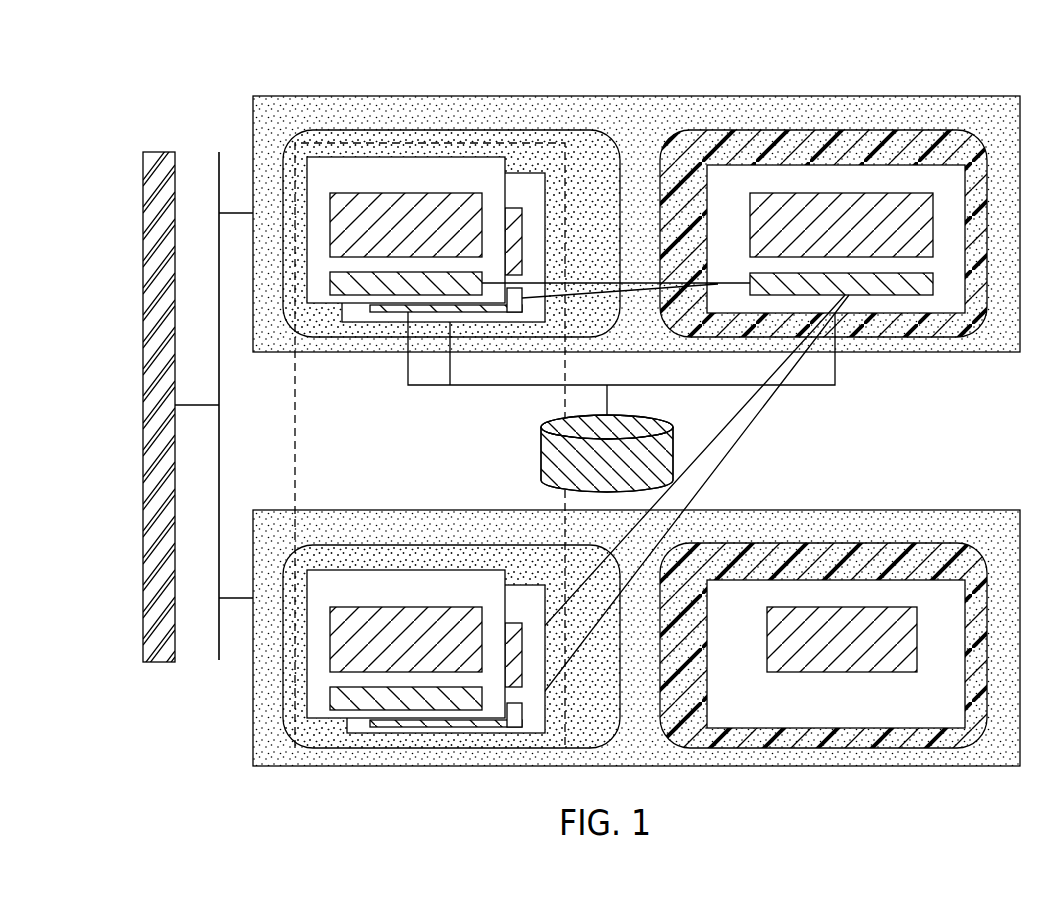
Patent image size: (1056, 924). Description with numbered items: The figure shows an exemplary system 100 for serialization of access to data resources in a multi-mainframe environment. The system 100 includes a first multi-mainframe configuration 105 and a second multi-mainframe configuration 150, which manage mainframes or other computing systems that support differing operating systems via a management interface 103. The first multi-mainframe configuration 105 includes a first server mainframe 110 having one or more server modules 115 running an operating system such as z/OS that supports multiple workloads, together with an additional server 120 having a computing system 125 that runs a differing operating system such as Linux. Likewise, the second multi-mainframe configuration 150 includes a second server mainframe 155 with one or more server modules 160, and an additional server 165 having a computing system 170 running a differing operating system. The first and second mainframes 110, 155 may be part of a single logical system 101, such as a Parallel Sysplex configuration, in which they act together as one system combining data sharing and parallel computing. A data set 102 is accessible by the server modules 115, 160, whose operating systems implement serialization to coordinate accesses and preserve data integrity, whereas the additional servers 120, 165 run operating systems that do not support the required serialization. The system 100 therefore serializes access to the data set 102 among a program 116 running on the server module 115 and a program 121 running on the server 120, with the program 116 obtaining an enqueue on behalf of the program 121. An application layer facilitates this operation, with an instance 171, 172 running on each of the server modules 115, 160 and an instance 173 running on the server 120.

The system 100 is at (153, 70).
The single logical system 101 is at (295, 405).
The data set 102 is at (540, 452).
The management interface 103 is at (143, 330).
The first multi-mainframe configuration 105 is at (253, 142).
The first server mainframe 110 is at (365, 138).
The server module 115 is at (510, 208).
The program 116 is at (442, 200).
The additional server 120 is at (755, 137).
The program 121 is at (828, 198).
The computing system 125 is at (933, 177).
The second multi-mainframe configuration 150 is at (253, 640).
The second server mainframe 155 is at (362, 545).
The server module 160 is at (532, 597).
The additional server 165 is at (947, 553).
The computing system 170 is at (912, 588).
The instance of the application layer 171 is at (360, 287).
The instance of the application layer 172 is at (428, 698).
The instance of the application layer 173 is at (897, 287).